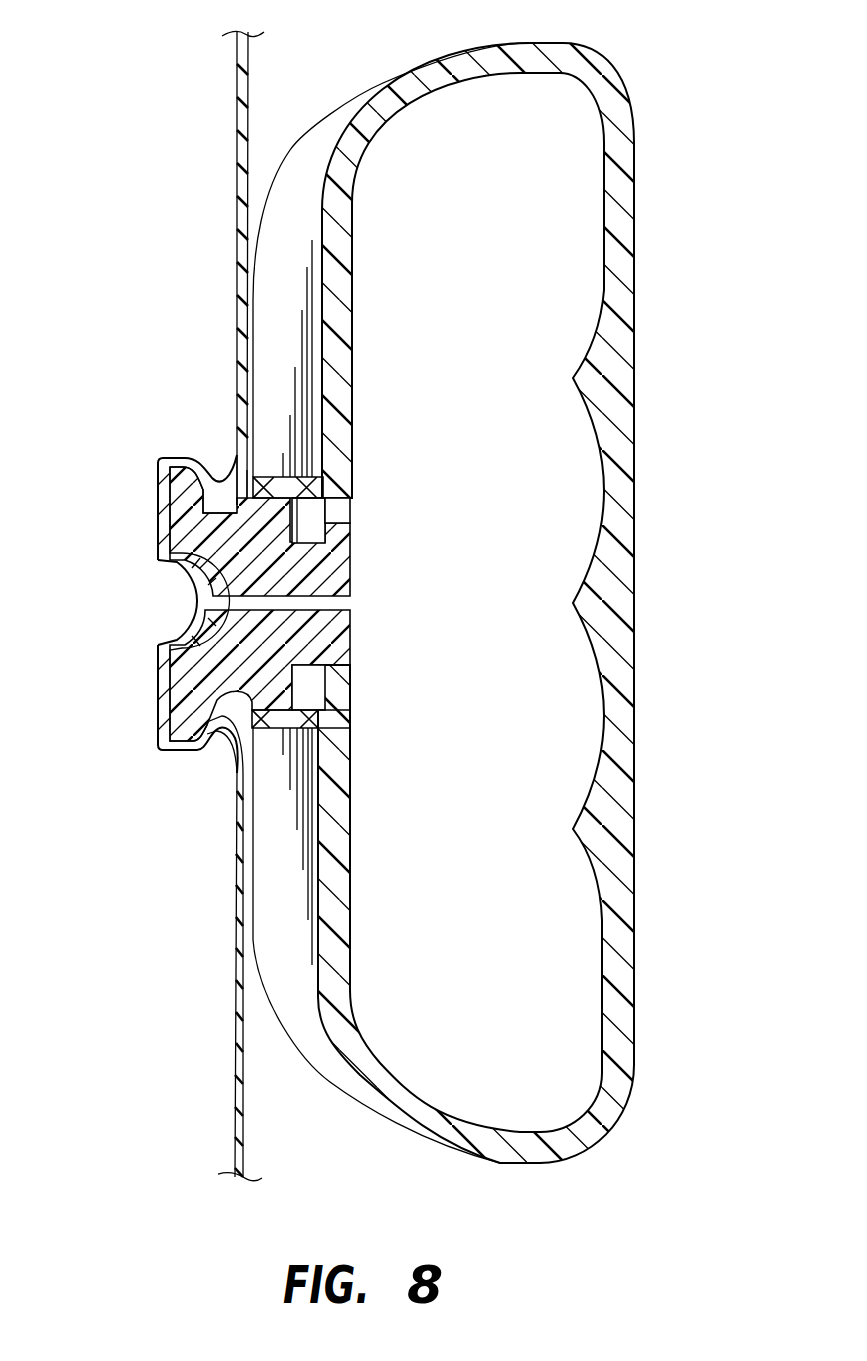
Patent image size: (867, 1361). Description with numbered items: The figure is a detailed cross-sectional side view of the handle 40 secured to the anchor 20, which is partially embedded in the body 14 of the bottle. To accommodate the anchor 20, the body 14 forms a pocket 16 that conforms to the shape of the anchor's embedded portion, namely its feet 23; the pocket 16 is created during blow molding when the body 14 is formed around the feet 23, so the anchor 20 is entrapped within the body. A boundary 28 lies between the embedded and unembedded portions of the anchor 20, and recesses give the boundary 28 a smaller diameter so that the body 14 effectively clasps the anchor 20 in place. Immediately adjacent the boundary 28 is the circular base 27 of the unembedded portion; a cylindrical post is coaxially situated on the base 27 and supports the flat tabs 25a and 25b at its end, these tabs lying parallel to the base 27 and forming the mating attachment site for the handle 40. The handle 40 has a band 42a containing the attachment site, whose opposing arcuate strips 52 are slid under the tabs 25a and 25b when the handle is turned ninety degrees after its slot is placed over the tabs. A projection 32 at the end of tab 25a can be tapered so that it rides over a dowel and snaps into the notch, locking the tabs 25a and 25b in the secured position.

The body 14 is at (237, 85).
The pocket 16 is at (146, 456).
The anchor 20 is at (372, 585).
The feet 23 is at (184, 720).
The tab 25a is at (350, 540).
The tab 25b is at (352, 695).
The circular base 27 is at (300, 527).
The boundary 28 is at (238, 505).
The projection 32 is at (340, 512).
The handle 40 is at (600, 66).
The band 42a is at (352, 100).
The arcuate strips 52 is at (323, 480).